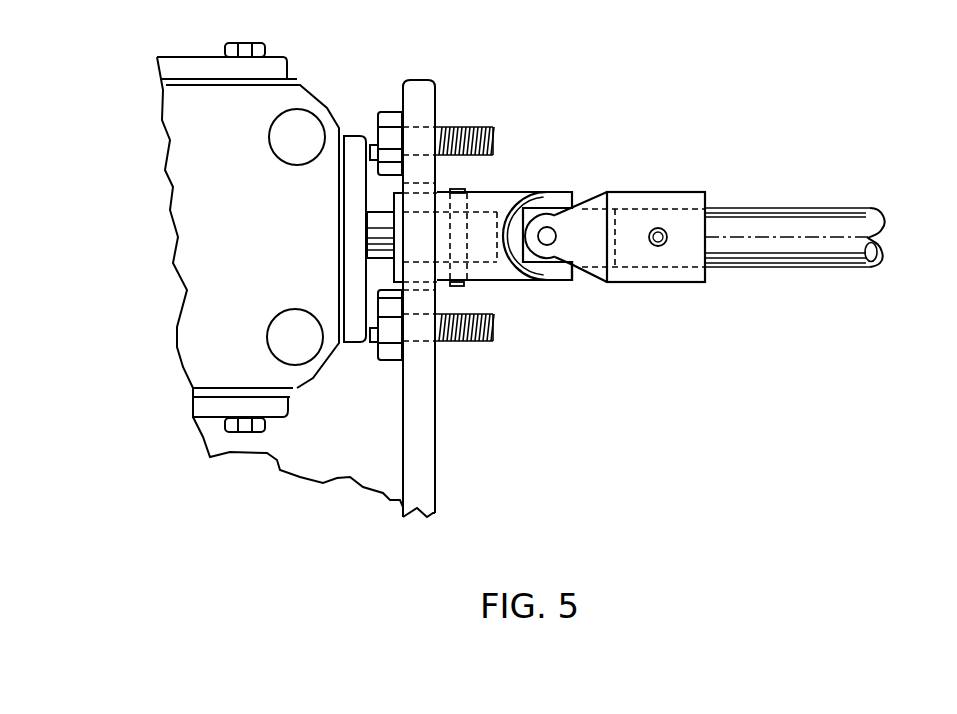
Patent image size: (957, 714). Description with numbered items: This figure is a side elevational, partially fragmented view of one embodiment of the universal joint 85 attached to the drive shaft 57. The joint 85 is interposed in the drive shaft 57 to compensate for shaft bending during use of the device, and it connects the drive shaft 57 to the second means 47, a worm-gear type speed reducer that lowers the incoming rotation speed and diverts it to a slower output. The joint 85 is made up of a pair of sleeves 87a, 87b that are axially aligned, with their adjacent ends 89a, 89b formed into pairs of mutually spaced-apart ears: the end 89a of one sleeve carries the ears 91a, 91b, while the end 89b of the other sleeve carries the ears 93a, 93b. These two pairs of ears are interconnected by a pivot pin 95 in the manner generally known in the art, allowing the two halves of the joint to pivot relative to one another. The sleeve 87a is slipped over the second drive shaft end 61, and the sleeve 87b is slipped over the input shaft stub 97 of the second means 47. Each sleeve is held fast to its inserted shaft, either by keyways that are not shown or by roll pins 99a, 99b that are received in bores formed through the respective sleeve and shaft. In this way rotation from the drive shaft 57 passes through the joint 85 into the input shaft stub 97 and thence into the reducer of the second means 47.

The second means 47 is at (158, 369).
The drive shaft 57 is at (867, 221).
The second drive shaft end 61 is at (707, 210).
The universal joint 85 is at (536, 206).
The sleeve 87a is at (703, 197).
The sleeve 87b is at (397, 272).
The adjacent end 89a is at (593, 230).
The adjacent end 89b is at (465, 128).
The ear 91a is at (567, 282).
The ear 91b is at (569, 196).
The ear 93a is at (582, 210).
The ear 93b is at (583, 273).
The pivot pin 95 is at (547, 245).
The input shaft stub 97 is at (380, 227).
The roll pin 99a is at (666, 240).
The roll pin 99b is at (461, 286).